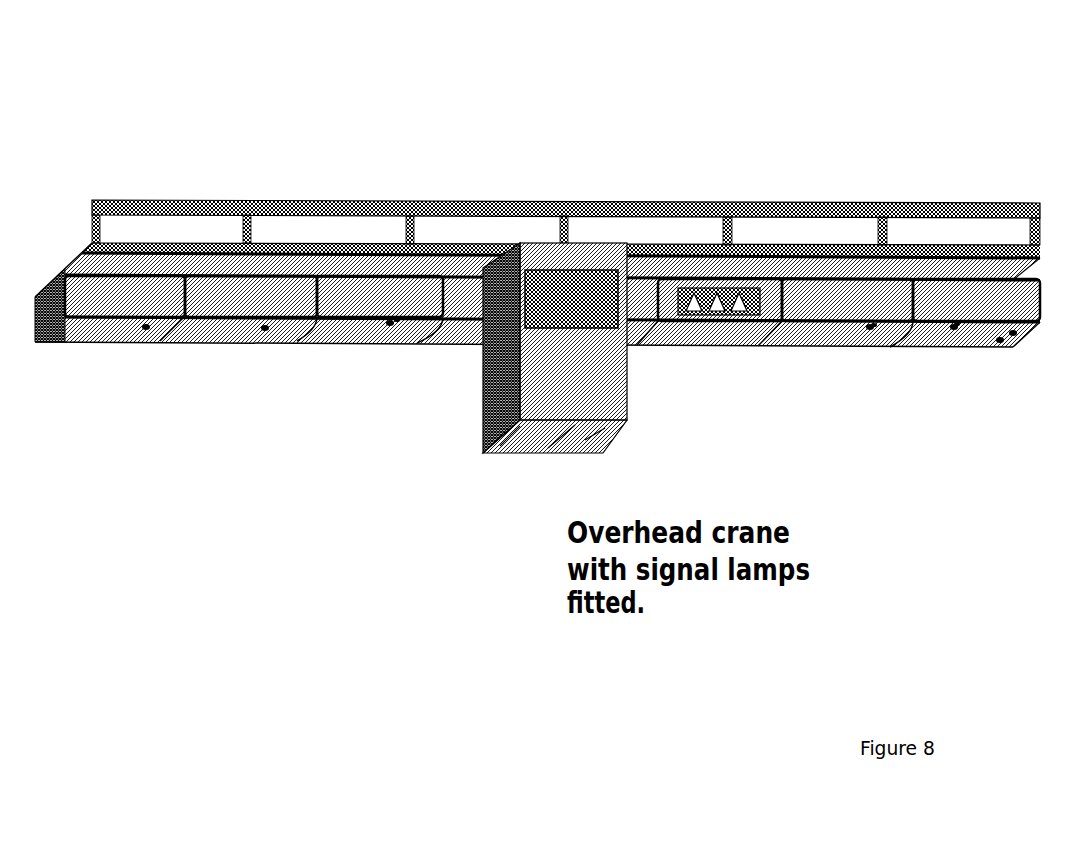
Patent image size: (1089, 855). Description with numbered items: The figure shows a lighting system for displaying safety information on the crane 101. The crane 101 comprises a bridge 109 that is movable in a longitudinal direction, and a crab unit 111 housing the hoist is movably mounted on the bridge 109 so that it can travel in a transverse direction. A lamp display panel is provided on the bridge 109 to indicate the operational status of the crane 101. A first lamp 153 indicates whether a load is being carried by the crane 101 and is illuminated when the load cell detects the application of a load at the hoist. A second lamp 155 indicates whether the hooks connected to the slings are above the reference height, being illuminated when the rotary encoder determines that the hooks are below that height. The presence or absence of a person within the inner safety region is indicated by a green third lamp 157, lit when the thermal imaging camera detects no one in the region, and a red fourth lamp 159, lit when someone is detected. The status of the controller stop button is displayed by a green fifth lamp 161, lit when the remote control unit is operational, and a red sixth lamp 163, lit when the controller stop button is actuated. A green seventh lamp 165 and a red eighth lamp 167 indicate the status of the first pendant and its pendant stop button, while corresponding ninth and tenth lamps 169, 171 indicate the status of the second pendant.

The crane 101 is at (958, 61).
The bridge 109 is at (800, 255).
The crab unit 111 is at (582, 257).
The first lamp 153 is at (143, 329).
The second lamp 155 is at (262, 330).
The third lamp 157 is at (389, 325).
The fourth lamp 159 is at (398, 323).
The fifth lamp 161 is at (868, 329).
The sixth lamp 163 is at (875, 328).
The seventh lamp 165 is at (953, 329).
The eighth lamp 167 is at (957, 327).
The ninth lamp 169 is at (1001, 342).
The tenth lamp 171 is at (1015, 335).